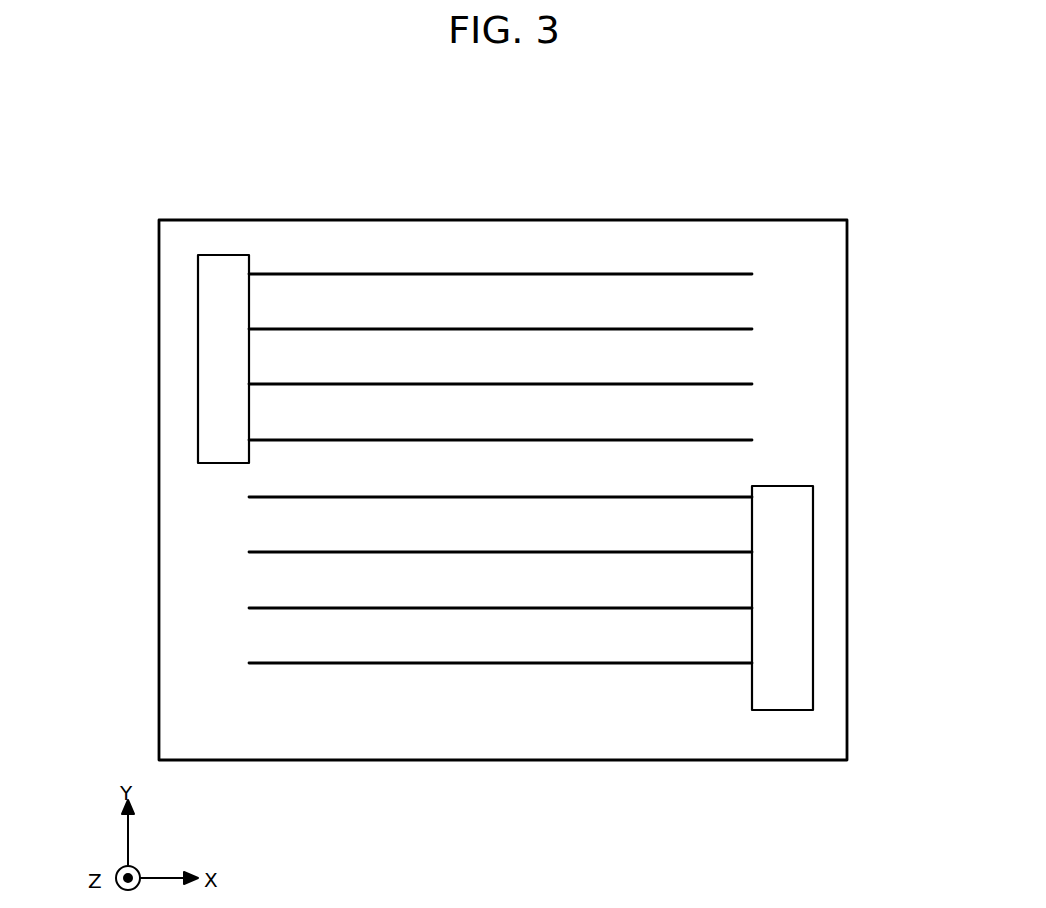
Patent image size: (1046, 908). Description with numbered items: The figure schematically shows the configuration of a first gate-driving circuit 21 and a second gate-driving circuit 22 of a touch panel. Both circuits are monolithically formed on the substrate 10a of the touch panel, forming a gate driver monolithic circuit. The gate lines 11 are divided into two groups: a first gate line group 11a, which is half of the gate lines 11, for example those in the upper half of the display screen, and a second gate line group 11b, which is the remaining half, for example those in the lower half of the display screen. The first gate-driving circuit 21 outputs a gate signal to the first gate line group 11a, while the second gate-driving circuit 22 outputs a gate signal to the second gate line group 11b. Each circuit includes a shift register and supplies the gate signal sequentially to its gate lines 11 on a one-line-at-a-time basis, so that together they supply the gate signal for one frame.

The substrate 10a is at (512, 220).
The gate lines 11 is at (501, 448).
The first gate line group 11a is at (897, 230).
The second gate line group 11b is at (397, 558).
The first gate-driving circuit 21 is at (211, 255).
The second gate-driving circuit 22 is at (780, 603).